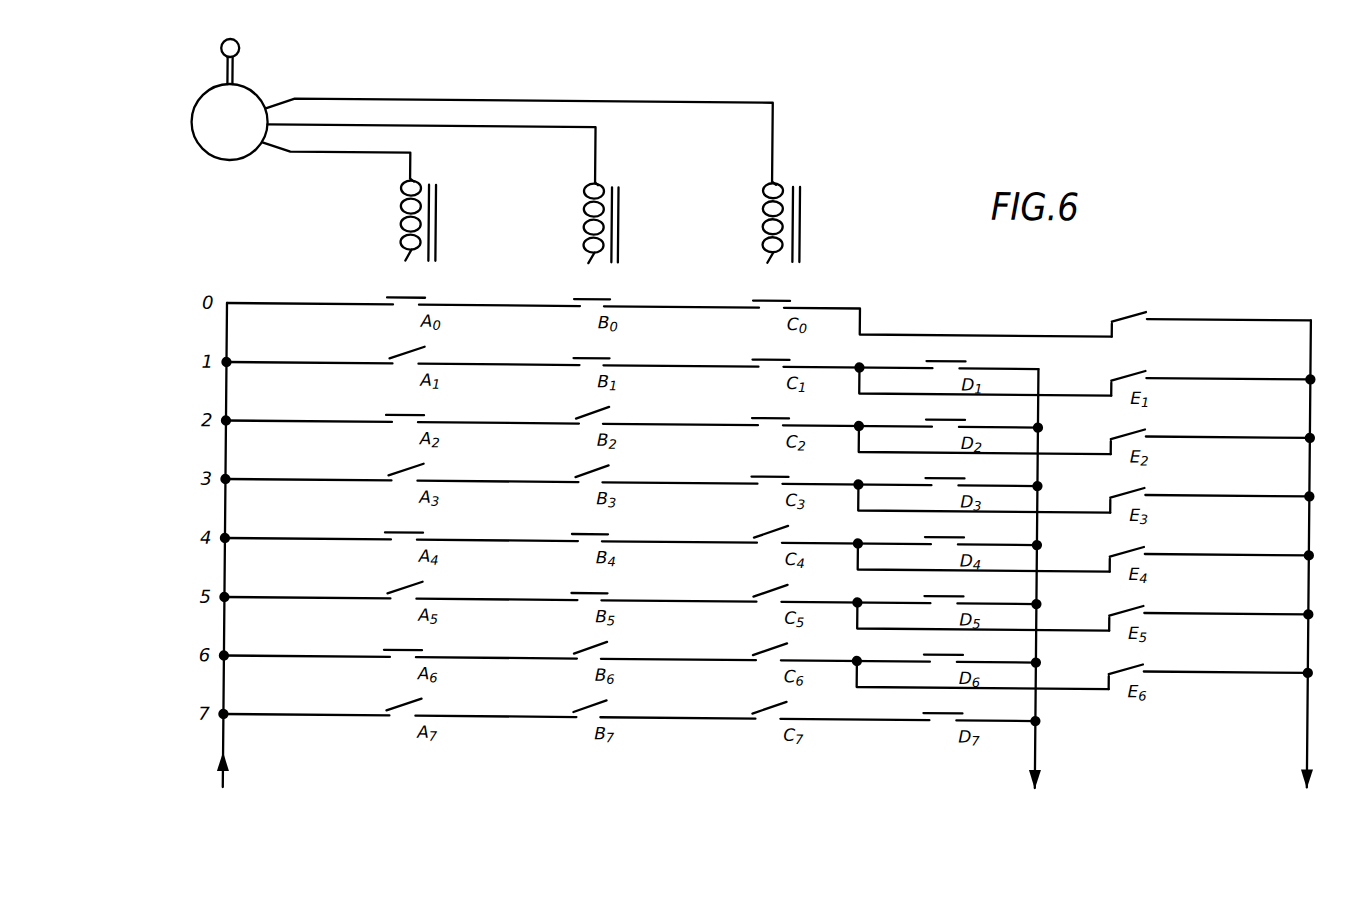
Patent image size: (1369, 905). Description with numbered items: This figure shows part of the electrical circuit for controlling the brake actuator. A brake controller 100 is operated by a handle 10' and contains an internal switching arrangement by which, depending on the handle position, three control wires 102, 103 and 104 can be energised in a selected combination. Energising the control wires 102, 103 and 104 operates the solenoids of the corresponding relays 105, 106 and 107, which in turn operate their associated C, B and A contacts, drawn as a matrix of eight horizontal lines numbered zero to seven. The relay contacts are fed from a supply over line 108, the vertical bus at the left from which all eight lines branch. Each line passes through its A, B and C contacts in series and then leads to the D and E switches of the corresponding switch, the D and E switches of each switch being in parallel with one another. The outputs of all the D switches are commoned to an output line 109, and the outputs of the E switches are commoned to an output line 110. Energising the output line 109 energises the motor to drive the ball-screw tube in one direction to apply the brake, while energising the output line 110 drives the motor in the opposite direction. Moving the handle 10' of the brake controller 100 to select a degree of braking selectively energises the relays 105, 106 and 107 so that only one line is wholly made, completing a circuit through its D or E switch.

The control handle 10' is at (264, 62).
The brake controller 100 is at (213, 160).
The control wire 102 is at (556, 98).
The control wire 103 is at (566, 126).
The control wire 104 is at (339, 157).
The relay 105 is at (759, 285).
The relay 106 is at (579, 286).
The relay 107 is at (392, 280).
The supply line 108 is at (219, 740).
The output line 109 is at (1041, 747).
The output line 110 is at (1313, 747).